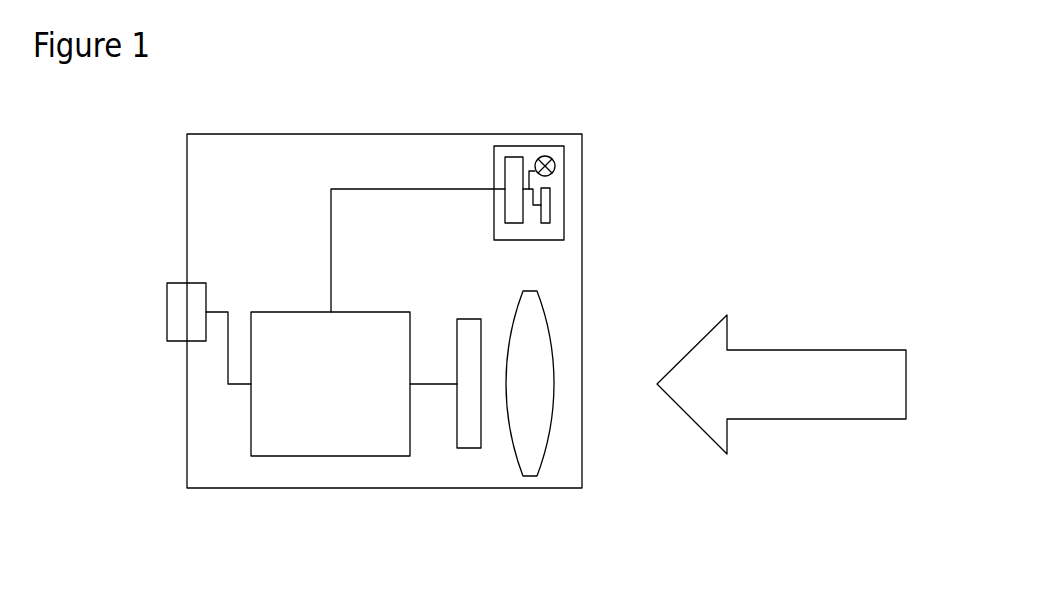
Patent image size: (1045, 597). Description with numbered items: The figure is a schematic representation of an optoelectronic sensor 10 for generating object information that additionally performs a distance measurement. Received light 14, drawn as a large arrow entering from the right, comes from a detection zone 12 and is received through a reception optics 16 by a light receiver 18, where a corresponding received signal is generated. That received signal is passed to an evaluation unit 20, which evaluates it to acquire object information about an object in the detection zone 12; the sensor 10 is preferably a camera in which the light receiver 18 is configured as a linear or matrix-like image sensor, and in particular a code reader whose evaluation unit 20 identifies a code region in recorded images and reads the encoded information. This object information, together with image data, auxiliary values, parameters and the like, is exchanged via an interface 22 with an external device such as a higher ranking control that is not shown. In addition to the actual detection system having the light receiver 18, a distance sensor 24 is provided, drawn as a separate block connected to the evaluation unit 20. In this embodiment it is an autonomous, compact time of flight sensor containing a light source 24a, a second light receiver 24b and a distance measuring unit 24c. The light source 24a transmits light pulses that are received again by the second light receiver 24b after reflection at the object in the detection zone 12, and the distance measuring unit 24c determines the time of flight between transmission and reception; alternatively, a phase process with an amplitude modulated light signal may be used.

The optoelectronic sensor 10 is at (280, 117).
The detection zone 12 is at (937, 245).
The received light 14 is at (775, 375).
The reception optics 16 is at (536, 431).
The light receiver 18 is at (468, 430).
The evaluation unit 20 is at (343, 407).
The interface 22 is at (183, 320).
The distance sensor 24 is at (522, 147).
The light source 24a is at (550, 161).
The second light receiver 24b is at (548, 212).
The distance measuring unit 24c is at (513, 198).